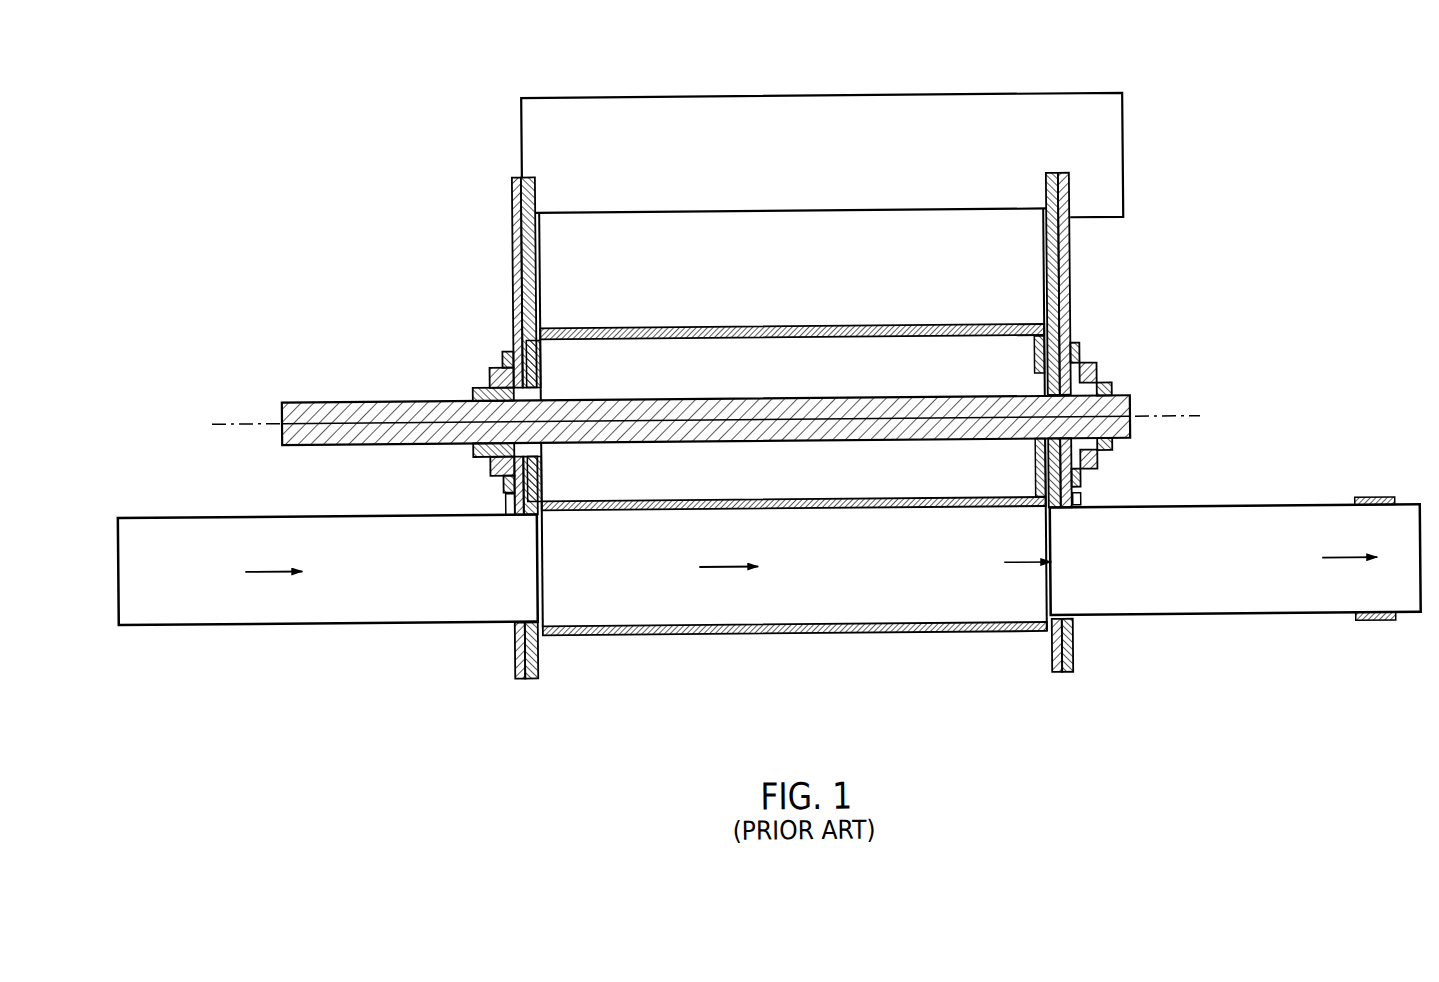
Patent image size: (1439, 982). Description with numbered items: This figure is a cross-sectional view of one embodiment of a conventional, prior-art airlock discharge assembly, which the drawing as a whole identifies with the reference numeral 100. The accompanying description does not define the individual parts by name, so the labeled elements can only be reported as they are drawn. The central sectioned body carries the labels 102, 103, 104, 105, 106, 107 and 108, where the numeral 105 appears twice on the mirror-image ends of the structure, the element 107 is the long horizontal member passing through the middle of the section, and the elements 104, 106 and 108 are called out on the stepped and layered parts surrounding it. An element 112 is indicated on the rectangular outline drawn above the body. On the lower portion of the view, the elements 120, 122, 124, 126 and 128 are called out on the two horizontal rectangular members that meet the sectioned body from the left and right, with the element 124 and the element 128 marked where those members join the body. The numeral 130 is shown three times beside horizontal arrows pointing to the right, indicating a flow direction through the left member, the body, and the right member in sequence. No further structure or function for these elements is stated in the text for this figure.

The prior art electric motor assembly 100 is at (1234, 253).
The motor housing 102 is at (1139, 238).
The bearing housing 103 is at (784, 303).
The bearing 104 is at (443, 398).
The end flange 105 is at (512, 291).
The inner sleeve 106 is at (599, 329).
The shaft 107 is at (225, 419).
The housing wall 108 is at (724, 223).
The controller enclosure 112 is at (822, 127).
The cooling duct assembly 120 is at (1269, 442).
The inlet duct 122 is at (206, 626).
The inlet opening 124 is at (483, 625).
The outlet duct 126 is at (1261, 619).
The outlet opening 128 is at (1117, 619).
The cooling air flow 130 is at (264, 566).